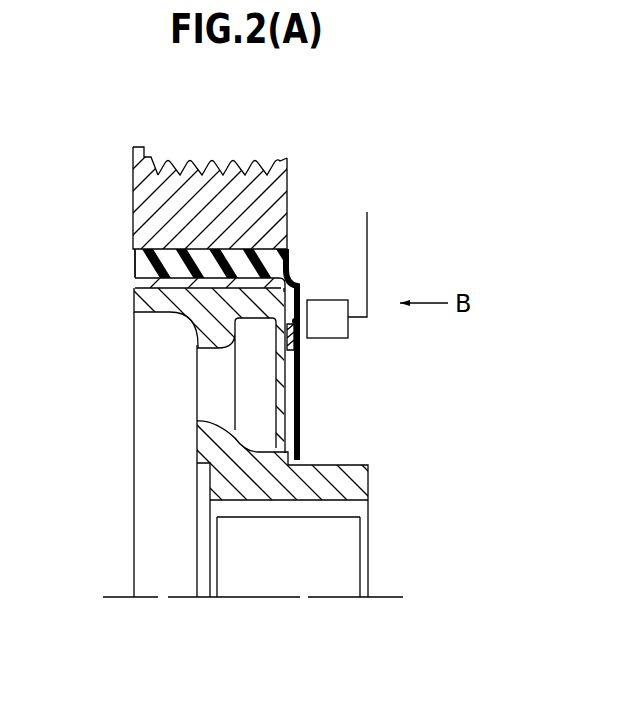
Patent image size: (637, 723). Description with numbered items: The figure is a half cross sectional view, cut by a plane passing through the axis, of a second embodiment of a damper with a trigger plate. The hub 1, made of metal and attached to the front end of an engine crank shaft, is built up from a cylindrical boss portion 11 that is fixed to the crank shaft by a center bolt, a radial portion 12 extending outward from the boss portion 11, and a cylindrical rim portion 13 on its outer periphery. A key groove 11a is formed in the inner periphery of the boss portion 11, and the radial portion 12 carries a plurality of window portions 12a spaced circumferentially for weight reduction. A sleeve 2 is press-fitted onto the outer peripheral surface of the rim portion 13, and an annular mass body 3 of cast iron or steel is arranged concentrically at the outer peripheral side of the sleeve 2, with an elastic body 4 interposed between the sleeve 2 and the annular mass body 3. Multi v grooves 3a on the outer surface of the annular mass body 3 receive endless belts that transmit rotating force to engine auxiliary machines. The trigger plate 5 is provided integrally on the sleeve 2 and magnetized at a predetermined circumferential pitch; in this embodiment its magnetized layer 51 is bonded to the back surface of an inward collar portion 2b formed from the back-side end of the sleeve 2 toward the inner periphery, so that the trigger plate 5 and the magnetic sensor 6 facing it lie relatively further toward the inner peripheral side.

The hub 1 is at (197, 466).
The sleeve 2 is at (192, 267).
The inward collar portion 2b is at (283, 337).
The annular mass body 3 is at (203, 161).
The multi v grooves 3a is at (225, 170).
The elastic body 4 is at (133, 262).
The trigger plate 5 is at (301, 347).
The magnetized layer 51 is at (297, 322).
The magnetic sensor 6 is at (337, 325).
The cylindrical boss portion 11 is at (350, 483).
The key groove 11a is at (308, 500).
The radial portion 12 is at (200, 335).
The window portions 12a is at (208, 385).
The cylindrical rim portion 13 is at (134, 303).